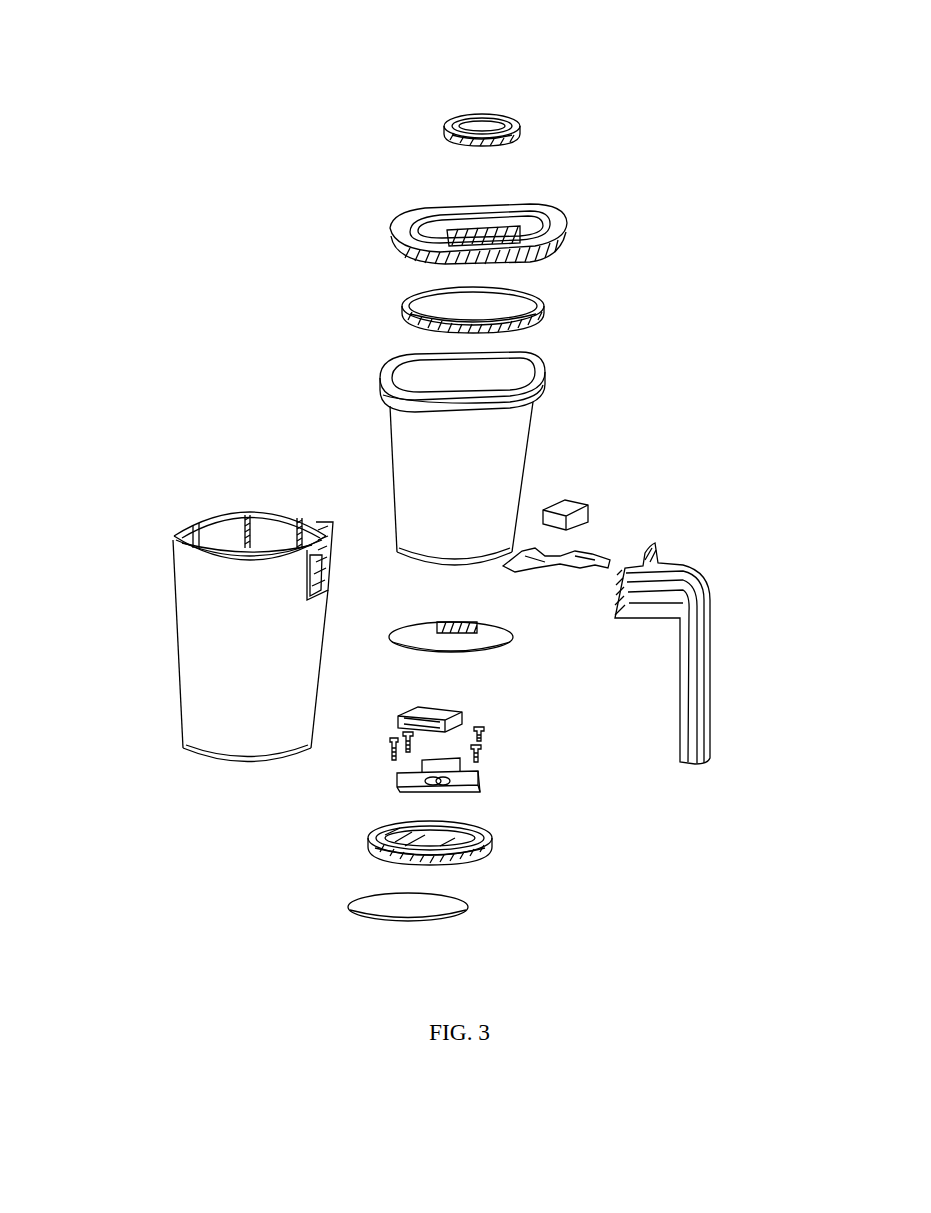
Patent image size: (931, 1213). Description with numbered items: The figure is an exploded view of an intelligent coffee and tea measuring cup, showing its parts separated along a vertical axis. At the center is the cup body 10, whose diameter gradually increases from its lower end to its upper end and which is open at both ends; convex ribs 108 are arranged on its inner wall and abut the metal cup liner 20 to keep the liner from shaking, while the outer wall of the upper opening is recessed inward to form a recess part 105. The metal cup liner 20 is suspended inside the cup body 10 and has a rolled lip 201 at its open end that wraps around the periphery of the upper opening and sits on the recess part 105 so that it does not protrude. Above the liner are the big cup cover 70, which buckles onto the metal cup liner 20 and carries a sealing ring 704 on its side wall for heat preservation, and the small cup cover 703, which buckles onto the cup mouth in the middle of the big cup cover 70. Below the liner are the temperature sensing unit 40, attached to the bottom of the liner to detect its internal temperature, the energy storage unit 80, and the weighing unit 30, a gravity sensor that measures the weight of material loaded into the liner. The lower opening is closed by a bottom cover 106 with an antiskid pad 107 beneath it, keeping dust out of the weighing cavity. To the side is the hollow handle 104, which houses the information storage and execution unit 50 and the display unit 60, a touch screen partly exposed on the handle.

The cup body 10 is at (199, 594).
The recess part 105 is at (170, 540).
The bottom cover 106 is at (367, 848).
The antiskid pad 107 is at (383, 907).
The convex ribs 108 is at (293, 523).
The metal cup liner 20 is at (413, 443).
The rolled lip 201 is at (373, 380).
The weighing unit 30 is at (483, 793).
The temperature sensing unit 40 is at (460, 643).
The information storage and execution unit 50 is at (550, 557).
The display unit 60 is at (580, 500).
The big cup cover 70 is at (407, 213).
The small cup cover 703 is at (473, 111).
The sealing ring 704 is at (393, 303).
The energy storage unit 80 is at (483, 727).
The handle 104 is at (713, 652).